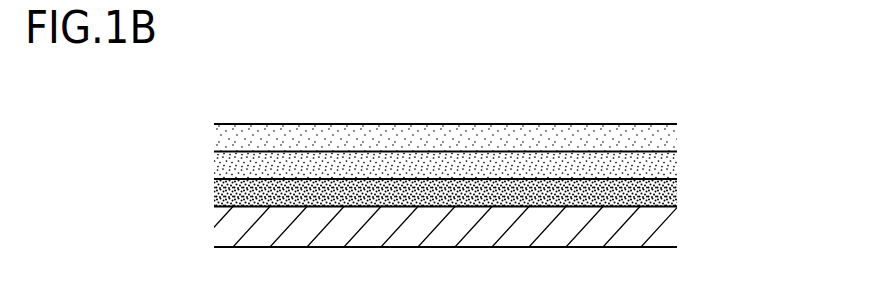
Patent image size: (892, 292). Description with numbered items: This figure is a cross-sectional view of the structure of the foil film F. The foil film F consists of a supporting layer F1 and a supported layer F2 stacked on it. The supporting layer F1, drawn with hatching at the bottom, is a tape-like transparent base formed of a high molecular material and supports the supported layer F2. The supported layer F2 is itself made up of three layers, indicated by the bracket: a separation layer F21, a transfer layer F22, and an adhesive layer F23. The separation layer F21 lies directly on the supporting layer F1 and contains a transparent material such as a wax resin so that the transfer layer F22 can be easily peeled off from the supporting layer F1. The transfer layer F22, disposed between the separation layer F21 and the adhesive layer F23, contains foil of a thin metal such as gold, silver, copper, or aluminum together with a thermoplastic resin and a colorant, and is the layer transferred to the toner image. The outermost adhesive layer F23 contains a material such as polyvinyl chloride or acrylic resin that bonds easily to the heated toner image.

The foil film F is at (547, 106).
The supporting layer F1 is at (668, 228).
The supported layer F2 is at (762, 120).
The separation layer F21 is at (670, 192).
The transfer layer F22 is at (670, 163).
The adhesive layer F23 is at (665, 142).